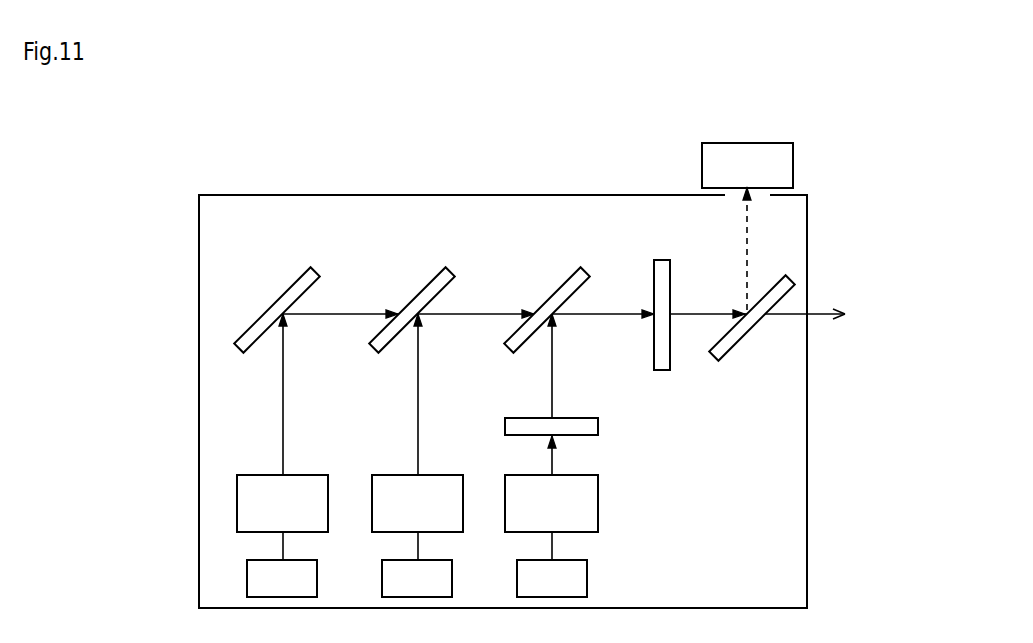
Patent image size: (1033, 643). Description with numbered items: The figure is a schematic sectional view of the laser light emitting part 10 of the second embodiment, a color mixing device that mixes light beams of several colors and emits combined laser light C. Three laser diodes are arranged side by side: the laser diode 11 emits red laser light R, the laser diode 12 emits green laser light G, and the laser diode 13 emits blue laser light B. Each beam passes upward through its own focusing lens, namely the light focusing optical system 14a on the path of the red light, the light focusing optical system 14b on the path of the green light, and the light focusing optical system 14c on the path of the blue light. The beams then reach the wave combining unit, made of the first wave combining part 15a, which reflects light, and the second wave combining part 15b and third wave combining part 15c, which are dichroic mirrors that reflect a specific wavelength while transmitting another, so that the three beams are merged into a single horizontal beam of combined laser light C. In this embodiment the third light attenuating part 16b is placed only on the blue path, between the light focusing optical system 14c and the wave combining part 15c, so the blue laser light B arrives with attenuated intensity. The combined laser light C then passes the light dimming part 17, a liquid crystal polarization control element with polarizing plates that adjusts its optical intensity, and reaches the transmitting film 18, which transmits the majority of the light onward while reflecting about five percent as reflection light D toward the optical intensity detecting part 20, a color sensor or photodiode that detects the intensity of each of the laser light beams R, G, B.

The laser light emitting part 10 is at (367, 182).
The laser diode 11 is at (282, 564).
The laser diode 12 is at (417, 564).
The laser diode 13 is at (552, 564).
The light focusing optical system 14a is at (282, 503).
The light focusing optical system 14b is at (417, 503).
The light focusing optical system 14c is at (551, 503).
The first wave combining part 15a is at (282, 290).
The second wave combining part 15b is at (417, 290).
The third wave combining part 15c is at (553, 290).
The third light attenuating part 16b is at (598, 433).
The light dimming part 17 is at (662, 372).
The transmitting film 18 is at (722, 353).
The optical intensity detecting part 20 is at (712, 143).
The red laser light R is at (283, 380).
The green laser light G is at (418, 380).
The blue laser light B is at (552, 380).
The combined laser light C is at (598, 314).
The reflection light D is at (747, 257).